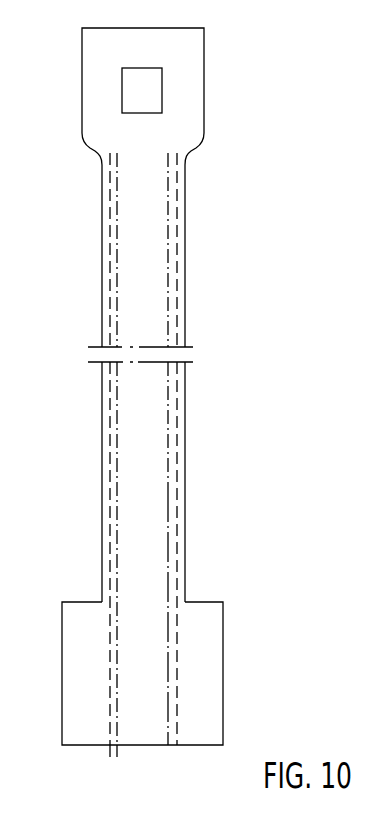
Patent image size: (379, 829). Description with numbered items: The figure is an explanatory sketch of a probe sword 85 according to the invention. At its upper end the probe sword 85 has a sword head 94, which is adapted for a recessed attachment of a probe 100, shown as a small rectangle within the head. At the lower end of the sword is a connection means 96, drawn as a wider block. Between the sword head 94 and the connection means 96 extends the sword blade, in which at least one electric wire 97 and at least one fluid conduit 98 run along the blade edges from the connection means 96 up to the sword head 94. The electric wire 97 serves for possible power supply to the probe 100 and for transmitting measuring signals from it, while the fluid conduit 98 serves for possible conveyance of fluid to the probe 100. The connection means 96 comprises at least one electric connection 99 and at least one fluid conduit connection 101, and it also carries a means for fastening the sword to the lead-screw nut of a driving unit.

The probe sword 85 is at (163, 411).
The sword head 94 is at (190, 97).
The connection means 96 is at (208, 647).
The electric wire 97 is at (168, 492).
The fluid conduit 98 is at (178, 408).
The electric connection 99 is at (167, 746).
The probe 100 is at (144, 74).
The fluid conduit connection 101 is at (177, 747).